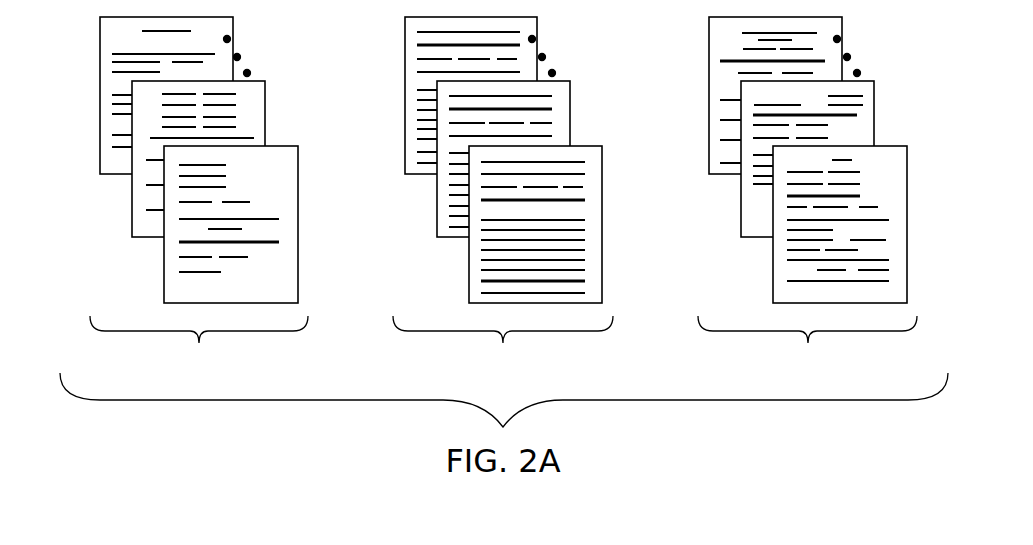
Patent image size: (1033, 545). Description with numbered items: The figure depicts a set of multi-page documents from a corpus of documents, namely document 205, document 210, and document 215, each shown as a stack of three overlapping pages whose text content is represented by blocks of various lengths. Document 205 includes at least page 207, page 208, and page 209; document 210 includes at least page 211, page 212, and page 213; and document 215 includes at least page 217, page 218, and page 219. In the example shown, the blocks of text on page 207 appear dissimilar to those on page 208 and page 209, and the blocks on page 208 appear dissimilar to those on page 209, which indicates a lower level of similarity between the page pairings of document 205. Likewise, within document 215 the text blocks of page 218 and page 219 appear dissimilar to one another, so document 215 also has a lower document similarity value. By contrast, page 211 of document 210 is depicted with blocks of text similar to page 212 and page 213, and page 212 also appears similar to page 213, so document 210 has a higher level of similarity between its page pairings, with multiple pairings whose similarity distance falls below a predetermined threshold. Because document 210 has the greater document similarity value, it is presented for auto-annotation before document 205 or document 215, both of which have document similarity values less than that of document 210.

The document 205 is at (199, 346).
The page 207 is at (164, 268).
The page 208 is at (132, 205).
The page 209 is at (100, 94).
The document 210 is at (503, 346).
The page 211 is at (469, 268).
The page 212 is at (437, 205).
The page 213 is at (405, 94).
The document 215 is at (807, 346).
The page 217 is at (772, 268).
The page 218 is at (741, 205).
The page 219 is at (709, 94).